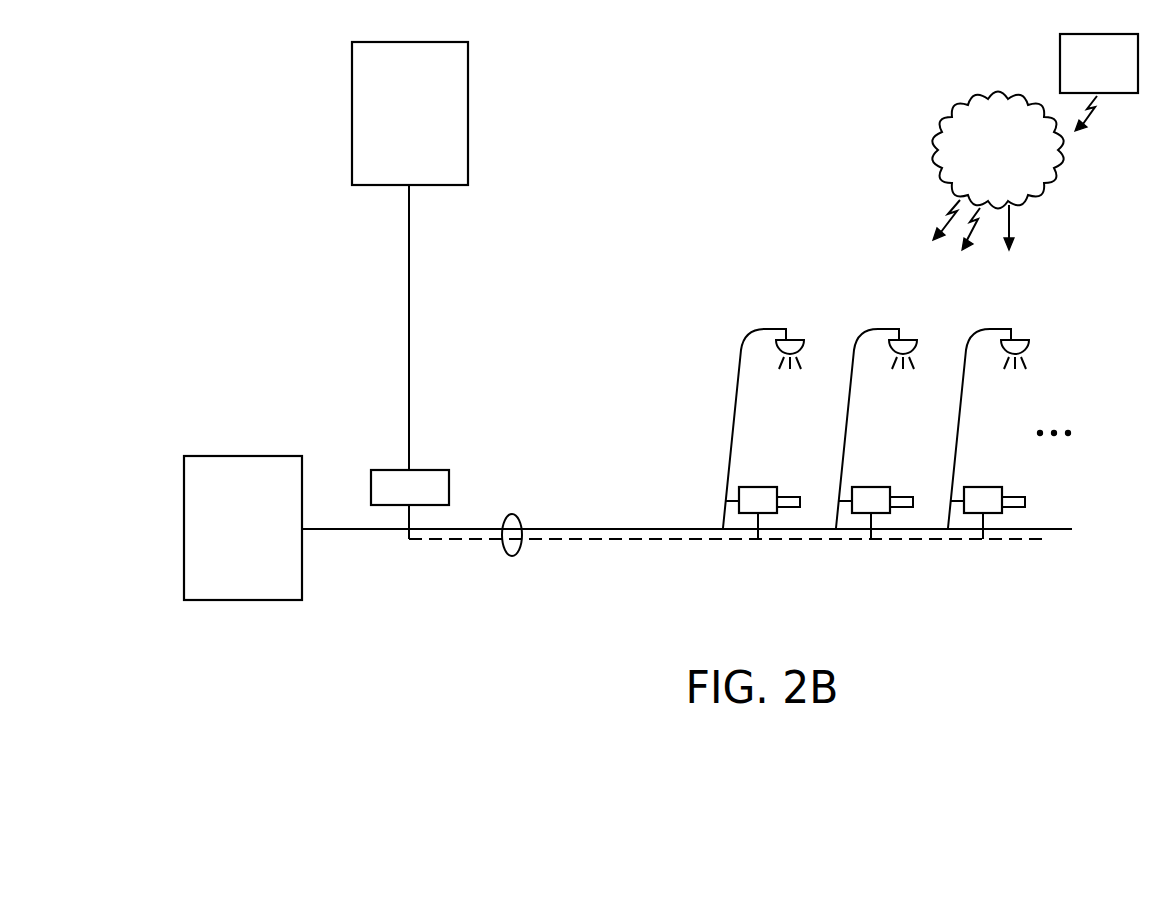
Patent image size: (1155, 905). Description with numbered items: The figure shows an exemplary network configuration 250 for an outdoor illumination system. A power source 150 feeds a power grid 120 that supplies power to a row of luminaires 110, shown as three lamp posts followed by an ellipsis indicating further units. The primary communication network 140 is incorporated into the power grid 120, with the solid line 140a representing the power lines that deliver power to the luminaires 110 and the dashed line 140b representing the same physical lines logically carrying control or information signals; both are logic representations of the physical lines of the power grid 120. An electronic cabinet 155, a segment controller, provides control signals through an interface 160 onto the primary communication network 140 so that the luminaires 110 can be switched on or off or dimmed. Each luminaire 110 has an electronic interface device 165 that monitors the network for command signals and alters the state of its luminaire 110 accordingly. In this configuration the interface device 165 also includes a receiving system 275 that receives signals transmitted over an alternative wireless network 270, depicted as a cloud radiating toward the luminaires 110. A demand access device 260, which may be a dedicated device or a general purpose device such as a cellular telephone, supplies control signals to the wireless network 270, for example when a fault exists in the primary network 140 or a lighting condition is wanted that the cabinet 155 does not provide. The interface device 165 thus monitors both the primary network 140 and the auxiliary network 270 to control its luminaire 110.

The luminaire 110 is at (795, 334).
The power grid 120 is at (623, 528).
The primary communication network 140 is at (514, 557).
The power lines 140a is at (550, 528).
The signal lines 140b is at (590, 541).
The power source 150 is at (248, 456).
The electronic cabinet 155 is at (458, 144).
The interface 160 is at (432, 470).
The electronic interface device 165 is at (765, 487).
The network configuration 250 is at (671, 64).
The demand access device 260 is at (1061, 46).
The alternative wireless network 270 is at (940, 117).
The receiving system 275 is at (796, 497).